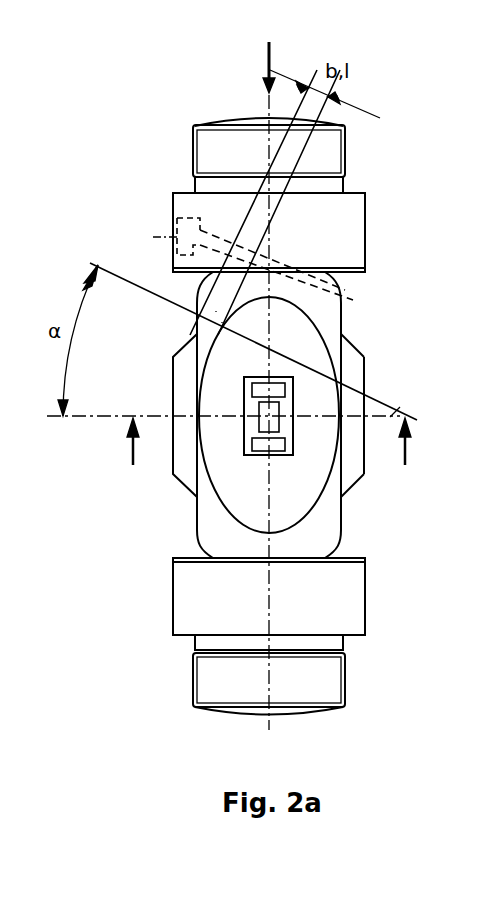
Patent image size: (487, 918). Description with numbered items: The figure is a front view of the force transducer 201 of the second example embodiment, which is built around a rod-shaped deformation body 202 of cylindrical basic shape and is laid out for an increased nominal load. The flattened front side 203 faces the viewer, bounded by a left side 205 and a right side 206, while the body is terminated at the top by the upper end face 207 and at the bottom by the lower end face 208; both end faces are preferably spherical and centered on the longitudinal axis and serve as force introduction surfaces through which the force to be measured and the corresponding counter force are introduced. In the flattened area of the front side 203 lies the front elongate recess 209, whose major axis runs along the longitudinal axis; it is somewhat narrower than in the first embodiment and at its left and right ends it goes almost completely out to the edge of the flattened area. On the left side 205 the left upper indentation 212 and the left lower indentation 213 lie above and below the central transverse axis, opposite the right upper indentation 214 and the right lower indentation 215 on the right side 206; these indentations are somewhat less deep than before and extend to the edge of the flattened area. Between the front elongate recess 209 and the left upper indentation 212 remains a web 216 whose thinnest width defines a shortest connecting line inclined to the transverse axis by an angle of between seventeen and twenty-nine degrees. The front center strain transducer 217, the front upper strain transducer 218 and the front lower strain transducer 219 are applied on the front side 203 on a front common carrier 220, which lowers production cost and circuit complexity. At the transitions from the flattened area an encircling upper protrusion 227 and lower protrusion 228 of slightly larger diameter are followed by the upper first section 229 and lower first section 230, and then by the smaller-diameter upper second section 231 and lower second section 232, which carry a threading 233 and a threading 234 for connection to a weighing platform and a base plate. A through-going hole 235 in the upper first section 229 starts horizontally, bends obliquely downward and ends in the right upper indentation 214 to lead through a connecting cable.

The force transducer 201 is at (83, 104).
The deformation body 202 is at (176, 562).
The front side 203 is at (196, 602).
The left side 205 is at (173, 458).
The right side 206 is at (364, 447).
The upper end face 207 is at (248, 119).
The lower end face 208 is at (293, 712).
The front elongate recess 209 is at (343, 497).
The left upper indentation 212 is at (197, 300).
The left lower indentation 213 is at (210, 540).
The right upper indentation 214 is at (345, 327).
The right lower indentation 215 is at (342, 525).
The web 216 is at (216, 311).
The front center strain transducer 217 is at (266, 427).
The front upper strain transducer 218 is at (256, 388).
The front lower strain transducer 219 is at (260, 447).
The front common carrier 220 is at (312, 478).
The upper protrusion 227 is at (367, 270).
The lower protrusion 228 is at (368, 568).
The upper first section 229 is at (342, 240).
The lower first section 230 is at (350, 627).
The upper second section 231 is at (320, 160).
The lower second section 232 is at (327, 687).
The threading 233 is at (347, 140).
The threading 234 is at (194, 686).
The through-going hole 235 is at (195, 258).